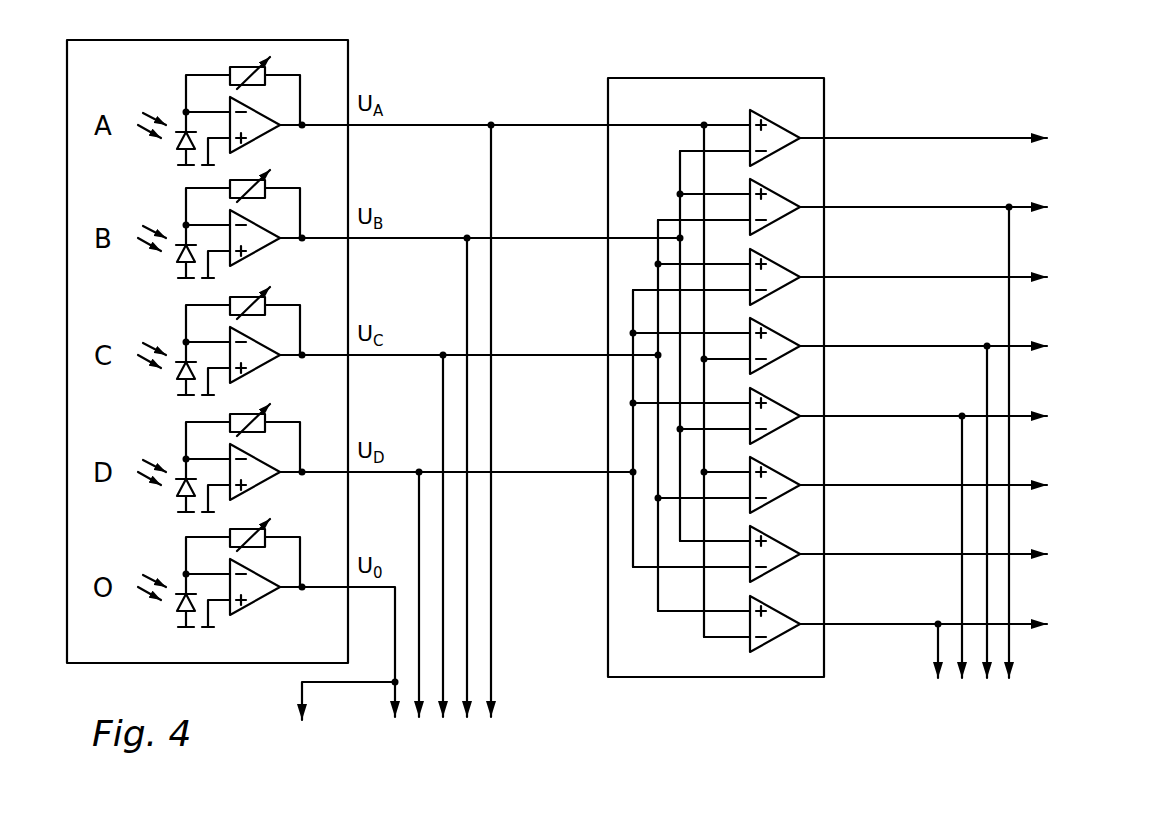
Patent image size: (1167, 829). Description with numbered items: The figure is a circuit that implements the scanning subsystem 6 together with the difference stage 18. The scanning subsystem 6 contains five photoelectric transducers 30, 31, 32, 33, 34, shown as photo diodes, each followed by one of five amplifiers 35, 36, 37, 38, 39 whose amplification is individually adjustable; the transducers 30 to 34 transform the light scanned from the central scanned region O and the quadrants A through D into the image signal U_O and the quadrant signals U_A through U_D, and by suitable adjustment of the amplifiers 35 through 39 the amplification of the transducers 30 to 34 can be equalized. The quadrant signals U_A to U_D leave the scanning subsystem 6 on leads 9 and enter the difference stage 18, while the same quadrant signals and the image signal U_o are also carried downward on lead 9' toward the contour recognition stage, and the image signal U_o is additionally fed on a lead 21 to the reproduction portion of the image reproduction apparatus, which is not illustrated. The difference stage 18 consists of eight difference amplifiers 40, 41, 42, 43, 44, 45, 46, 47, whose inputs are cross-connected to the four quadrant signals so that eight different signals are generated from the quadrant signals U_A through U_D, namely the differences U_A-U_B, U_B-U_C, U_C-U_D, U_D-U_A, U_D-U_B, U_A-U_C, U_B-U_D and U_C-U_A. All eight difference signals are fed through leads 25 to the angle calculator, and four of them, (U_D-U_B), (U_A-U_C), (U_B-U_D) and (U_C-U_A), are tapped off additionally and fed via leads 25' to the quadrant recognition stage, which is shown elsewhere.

The scanning subsystem 6 is at (348, 63).
The leads 9 is at (549, 365).
The lead 9' is at (444, 444).
The difference stage 18 is at (657, 96).
The lead 21 is at (298, 693).
The leads 25 is at (1101, 383).
The leads 25' is at (974, 465).
The photoelectric transducer 30 is at (175, 150).
The photoelectric transducer 31 is at (175, 263).
The photoelectric transducer 32 is at (175, 380).
The photoelectric transducer 33 is at (175, 497).
The photoelectric transducer 34 is at (175, 612).
The amplifier 35 is at (257, 131).
The amplifier 36 is at (257, 244).
The amplifier 37 is at (257, 361).
The amplifier 38 is at (257, 478).
The amplifier 39 is at (257, 593).
The difference amplifier 40 is at (775, 136).
The difference amplifier 41 is at (775, 205).
The difference amplifier 42 is at (775, 275).
The difference amplifier 43 is at (775, 344).
The difference amplifier 44 is at (775, 414).
The difference amplifier 45 is at (775, 483).
The difference amplifier 46 is at (775, 552).
The difference amplifier 47 is at (775, 622).